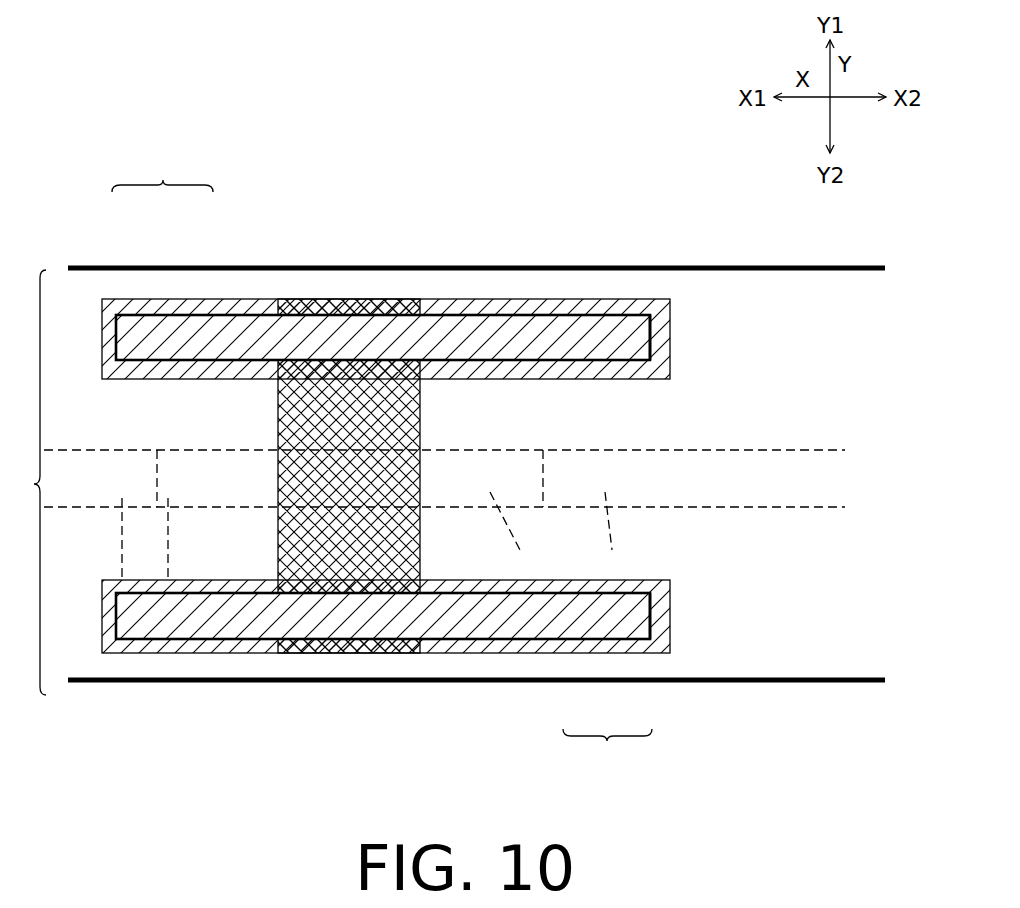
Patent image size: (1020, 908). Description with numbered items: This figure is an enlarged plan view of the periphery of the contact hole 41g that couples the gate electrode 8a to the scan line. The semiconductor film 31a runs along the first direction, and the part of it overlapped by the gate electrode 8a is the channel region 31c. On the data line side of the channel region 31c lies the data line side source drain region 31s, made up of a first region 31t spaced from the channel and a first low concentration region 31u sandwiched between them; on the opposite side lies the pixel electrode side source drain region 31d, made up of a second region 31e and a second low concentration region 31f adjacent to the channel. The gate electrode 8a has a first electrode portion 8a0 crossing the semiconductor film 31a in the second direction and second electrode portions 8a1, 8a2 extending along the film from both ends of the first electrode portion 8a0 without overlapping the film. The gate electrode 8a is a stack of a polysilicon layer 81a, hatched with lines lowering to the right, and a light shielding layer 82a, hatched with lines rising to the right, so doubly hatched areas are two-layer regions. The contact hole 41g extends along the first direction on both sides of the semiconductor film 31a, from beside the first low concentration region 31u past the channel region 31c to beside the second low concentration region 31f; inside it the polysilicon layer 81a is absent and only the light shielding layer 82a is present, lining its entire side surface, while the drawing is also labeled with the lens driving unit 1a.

The lens driving unit 1a is at (25, 482).
The gate electrode 8a is at (162, 174).
The polysilicon layer 81a is at (278, 427).
The light shielding layer 82a is at (213, 299).
The first electrode portion 8a0 is at (420, 418).
The second electrode portion 8a1 is at (258, 655).
The second electrode portion 8a2 is at (577, 299).
The contact hole 41g is at (618, 592).
The semiconductor film 31a is at (735, 507).
The channel region 31c is at (422, 533).
The pixel electrode side source drain region 31d is at (608, 748).
The second region 31e is at (612, 550).
The second low concentration region 31f is at (520, 550).
The data line side source drain region 31s is at (195, 724).
The first region 31t is at (122, 580).
The first low concentration region 31u is at (168, 580).